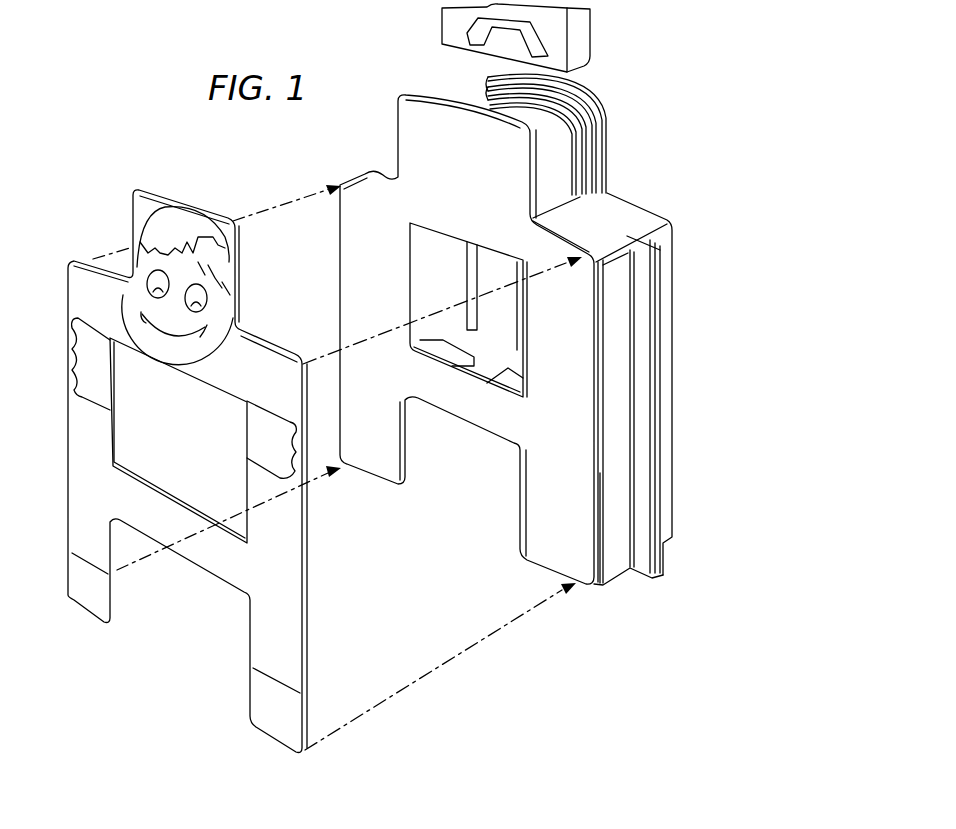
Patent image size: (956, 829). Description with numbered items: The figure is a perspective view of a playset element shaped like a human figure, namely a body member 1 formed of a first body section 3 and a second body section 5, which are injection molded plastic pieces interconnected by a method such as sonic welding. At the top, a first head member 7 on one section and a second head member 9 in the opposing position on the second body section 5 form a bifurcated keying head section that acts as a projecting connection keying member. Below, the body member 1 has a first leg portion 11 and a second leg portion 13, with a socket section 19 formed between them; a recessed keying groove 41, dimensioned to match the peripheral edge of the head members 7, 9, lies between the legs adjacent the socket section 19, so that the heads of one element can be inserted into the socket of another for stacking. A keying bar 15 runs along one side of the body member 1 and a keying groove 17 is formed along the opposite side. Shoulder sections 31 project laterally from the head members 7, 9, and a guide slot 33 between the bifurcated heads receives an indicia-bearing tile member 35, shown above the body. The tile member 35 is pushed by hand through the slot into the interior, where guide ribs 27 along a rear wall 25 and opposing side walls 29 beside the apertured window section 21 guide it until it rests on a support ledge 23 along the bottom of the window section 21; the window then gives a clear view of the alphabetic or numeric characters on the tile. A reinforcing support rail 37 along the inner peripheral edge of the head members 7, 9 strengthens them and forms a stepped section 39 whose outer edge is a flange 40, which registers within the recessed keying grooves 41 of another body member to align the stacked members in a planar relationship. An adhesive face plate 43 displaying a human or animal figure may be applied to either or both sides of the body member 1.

The body member 1 is at (714, 112).
The first body section 3 is at (575, 319).
The second body section 5 is at (493, 340).
The first head member 7 is at (575, 146).
The second head member 9 is at (413, 117).
The first leg portion 11 is at (373, 448).
The second leg portion 13 is at (551, 552).
The keying bar 15 is at (656, 373).
The keying groove 17 is at (391, 167).
The socket section 19 is at (472, 493).
The window section 21 is at (460, 313).
The support ledge 23 is at (507, 378).
The rear wall 25 is at (450, 279).
The guide ribs 27 is at (523, 335).
The side walls 29 is at (416, 250).
The shoulder sections 31 is at (366, 174).
The guide slot 33 is at (563, 127).
The tile member 35 is at (587, 42).
The reinforcing support rail 37 is at (592, 182).
The stepped section 39 is at (605, 108).
The flange 40 is at (488, 75).
The recessed keying groove 41 is at (520, 524).
The adhesive face plate 43 is at (75, 417).